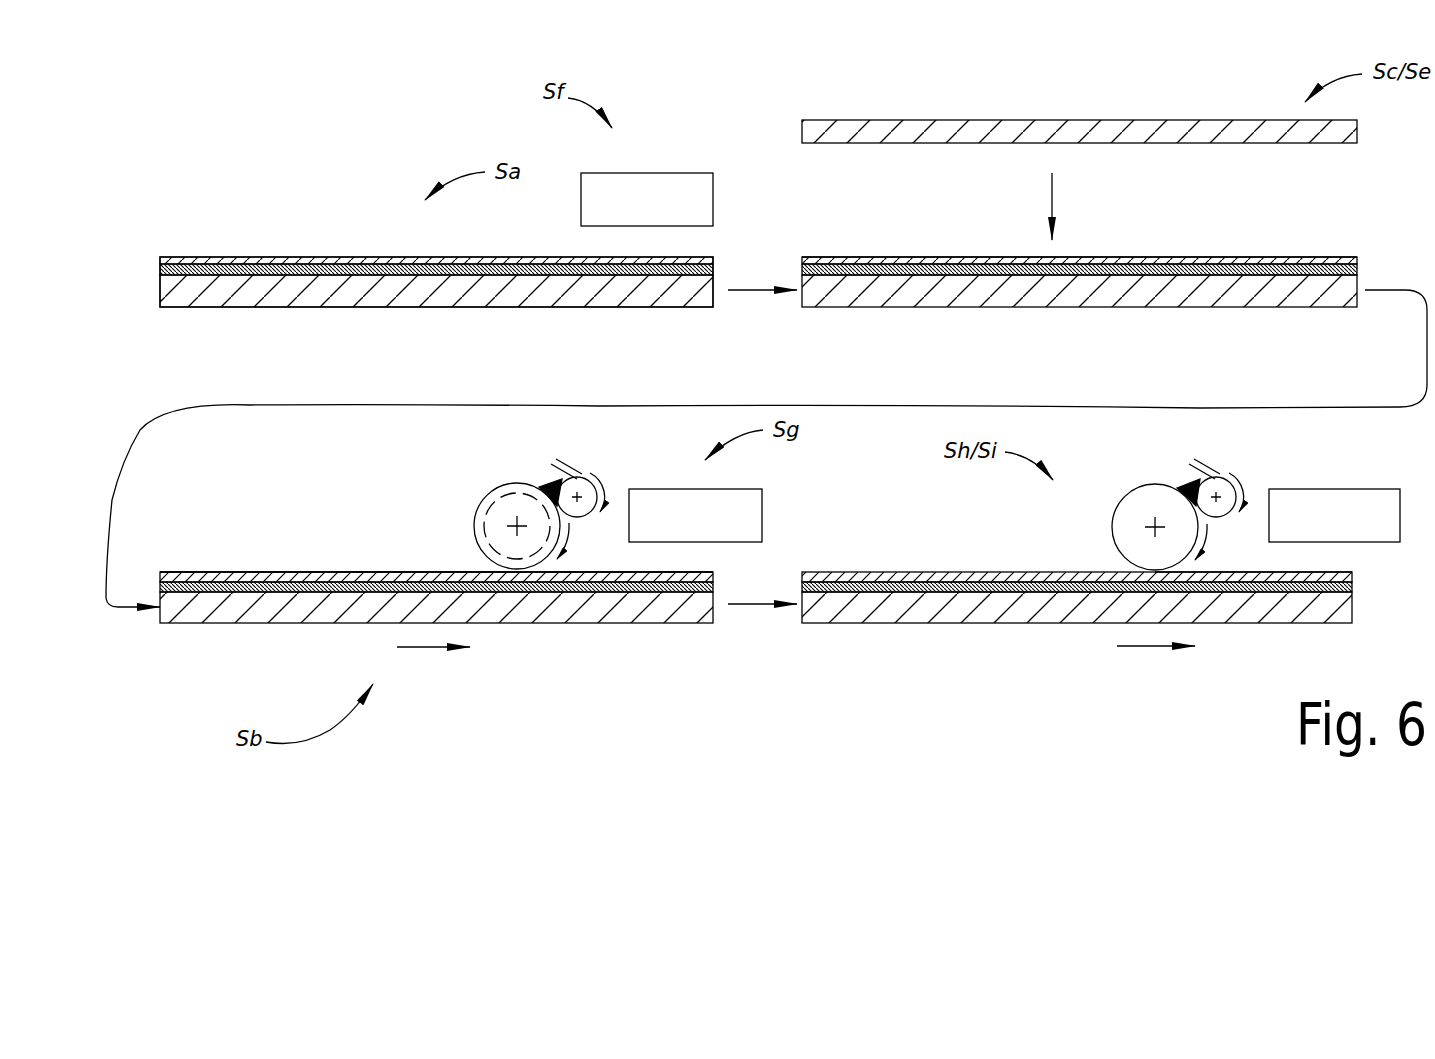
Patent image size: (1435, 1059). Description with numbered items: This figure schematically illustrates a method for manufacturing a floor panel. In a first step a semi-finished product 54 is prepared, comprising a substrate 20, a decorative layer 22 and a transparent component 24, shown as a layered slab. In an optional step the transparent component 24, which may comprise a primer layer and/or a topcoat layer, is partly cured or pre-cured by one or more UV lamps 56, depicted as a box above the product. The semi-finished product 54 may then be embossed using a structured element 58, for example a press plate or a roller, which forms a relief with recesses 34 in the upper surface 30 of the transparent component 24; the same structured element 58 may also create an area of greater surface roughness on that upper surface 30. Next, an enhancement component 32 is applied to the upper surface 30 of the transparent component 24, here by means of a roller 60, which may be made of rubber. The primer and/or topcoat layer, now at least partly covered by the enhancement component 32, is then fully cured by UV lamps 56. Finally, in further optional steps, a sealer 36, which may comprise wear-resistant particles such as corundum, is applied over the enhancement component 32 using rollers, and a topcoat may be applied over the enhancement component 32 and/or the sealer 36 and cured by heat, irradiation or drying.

The substrate 20 is at (301, 283).
The decorative layer 22 is at (160, 272).
The transparent component 24 is at (162, 262).
The upper surface 30 is at (1222, 257).
The enhancement component 32 is at (597, 572).
The recesses 34 is at (416, 572).
The sealer 36 is at (1272, 572).
The semi-finished product 54 is at (283, 245).
The UV lamps 56 is at (653, 192).
The structured element 58 is at (802, 125).
The roller 60 is at (503, 486).